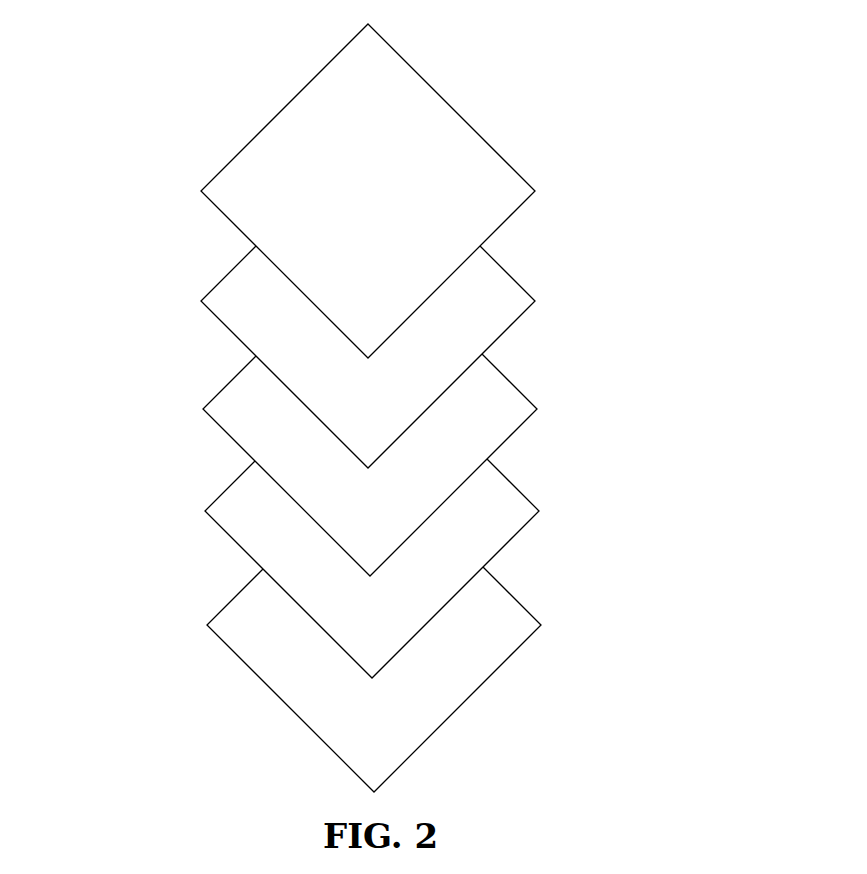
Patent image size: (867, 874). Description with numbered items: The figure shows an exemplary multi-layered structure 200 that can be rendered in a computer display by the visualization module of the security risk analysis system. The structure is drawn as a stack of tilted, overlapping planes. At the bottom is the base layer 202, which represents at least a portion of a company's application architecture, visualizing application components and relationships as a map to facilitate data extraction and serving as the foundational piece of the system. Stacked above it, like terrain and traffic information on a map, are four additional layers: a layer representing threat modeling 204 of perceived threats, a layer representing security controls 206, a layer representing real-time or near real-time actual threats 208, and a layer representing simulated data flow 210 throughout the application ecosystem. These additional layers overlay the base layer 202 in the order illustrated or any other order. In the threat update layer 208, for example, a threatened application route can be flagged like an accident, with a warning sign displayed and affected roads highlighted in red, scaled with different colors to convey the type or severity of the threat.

The multi-layered structure 200 is at (118, 239).
The base layer 202 is at (500, 640).
The threat modeling layer 204 is at (517, 513).
The security controls layer 206 is at (502, 398).
The real-time actual threats layer 208 is at (488, 289).
The simulated data flow layer 210 is at (488, 179).